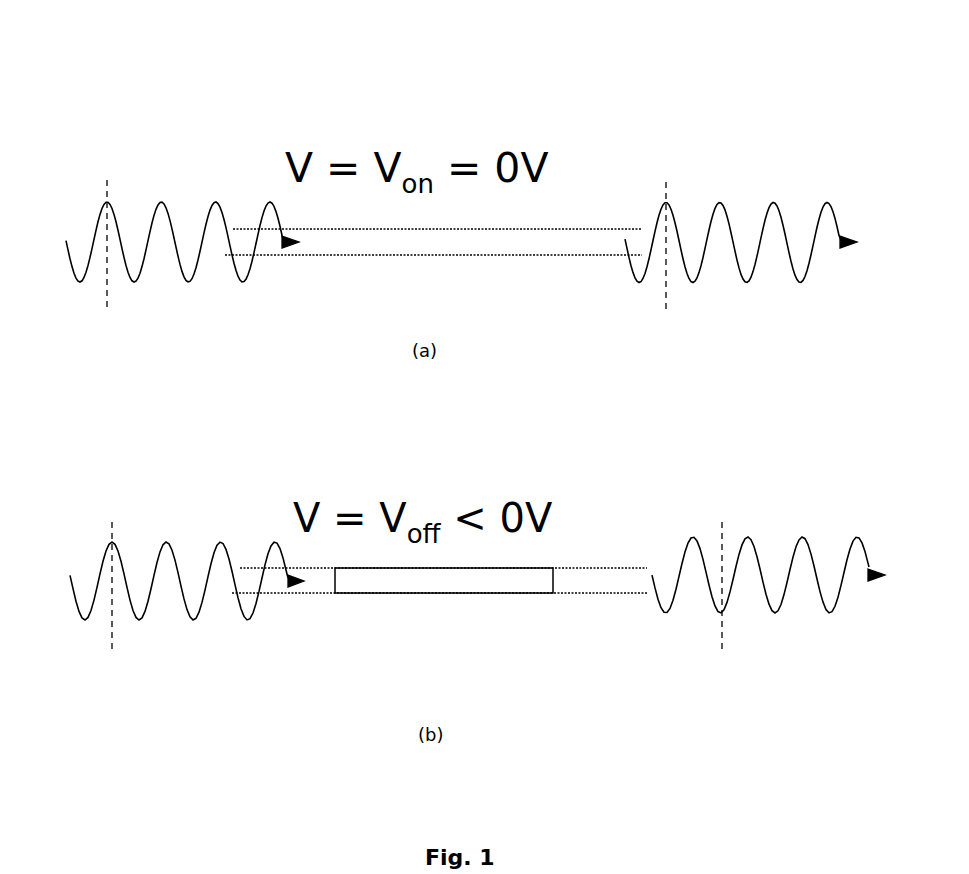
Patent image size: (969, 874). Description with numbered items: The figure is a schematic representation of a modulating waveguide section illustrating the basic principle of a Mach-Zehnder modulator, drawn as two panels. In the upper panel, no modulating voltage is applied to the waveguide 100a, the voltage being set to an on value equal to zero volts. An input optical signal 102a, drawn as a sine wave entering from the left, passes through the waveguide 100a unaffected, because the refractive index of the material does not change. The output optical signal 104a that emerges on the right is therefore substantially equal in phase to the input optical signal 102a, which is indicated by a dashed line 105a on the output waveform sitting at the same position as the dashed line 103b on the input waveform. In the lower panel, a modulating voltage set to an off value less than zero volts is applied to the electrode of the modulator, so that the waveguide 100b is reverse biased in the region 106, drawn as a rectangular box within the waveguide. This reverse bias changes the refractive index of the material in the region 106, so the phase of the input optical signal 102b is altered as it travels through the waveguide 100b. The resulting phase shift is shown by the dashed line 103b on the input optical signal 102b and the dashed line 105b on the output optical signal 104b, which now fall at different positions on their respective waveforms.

The waveguide 100a is at (292, 232).
The input optical signal 102a is at (178, 240).
The output optical signal 104a is at (735, 228).
The dashed line 103b is at (107, 288).
The dashed line 105a is at (663, 303).
The waveguide 100b is at (300, 568).
The input optical signal 102b is at (192, 577).
The output optical signal 104b is at (748, 568).
The dashed line 105b is at (720, 642).
The region 106 is at (413, 582).